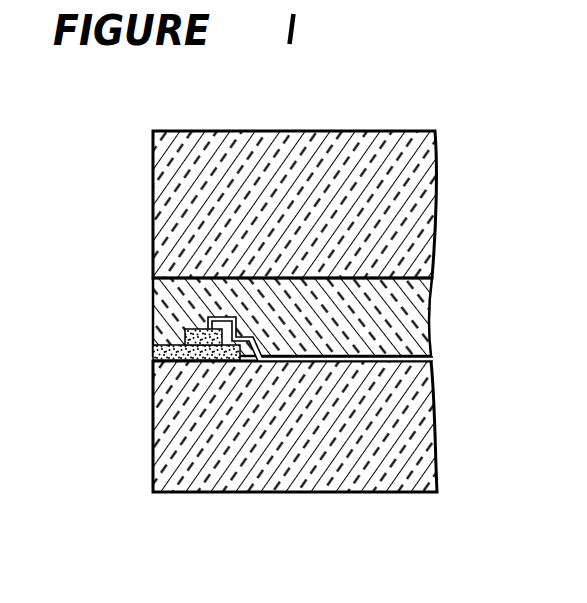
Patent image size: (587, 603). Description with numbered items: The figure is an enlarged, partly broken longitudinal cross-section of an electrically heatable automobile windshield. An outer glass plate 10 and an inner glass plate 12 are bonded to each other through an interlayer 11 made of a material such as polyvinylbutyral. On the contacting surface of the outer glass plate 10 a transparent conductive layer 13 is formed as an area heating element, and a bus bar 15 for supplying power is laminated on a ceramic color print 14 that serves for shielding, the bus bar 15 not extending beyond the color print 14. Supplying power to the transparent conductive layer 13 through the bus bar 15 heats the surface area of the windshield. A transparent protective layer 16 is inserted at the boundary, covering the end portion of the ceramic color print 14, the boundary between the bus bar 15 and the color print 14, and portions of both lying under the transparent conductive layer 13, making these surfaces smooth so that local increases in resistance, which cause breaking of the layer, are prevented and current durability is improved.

The outer glass plate 10 is at (293, 448).
The interlayer 11 is at (393, 319).
The inner glass plate 12 is at (395, 166).
The transparent conductive layer 13 is at (410, 358).
The ceramic color print 14 is at (153, 357).
The bus bar 15 is at (184, 326).
The transparent protective layer 16 is at (248, 358).